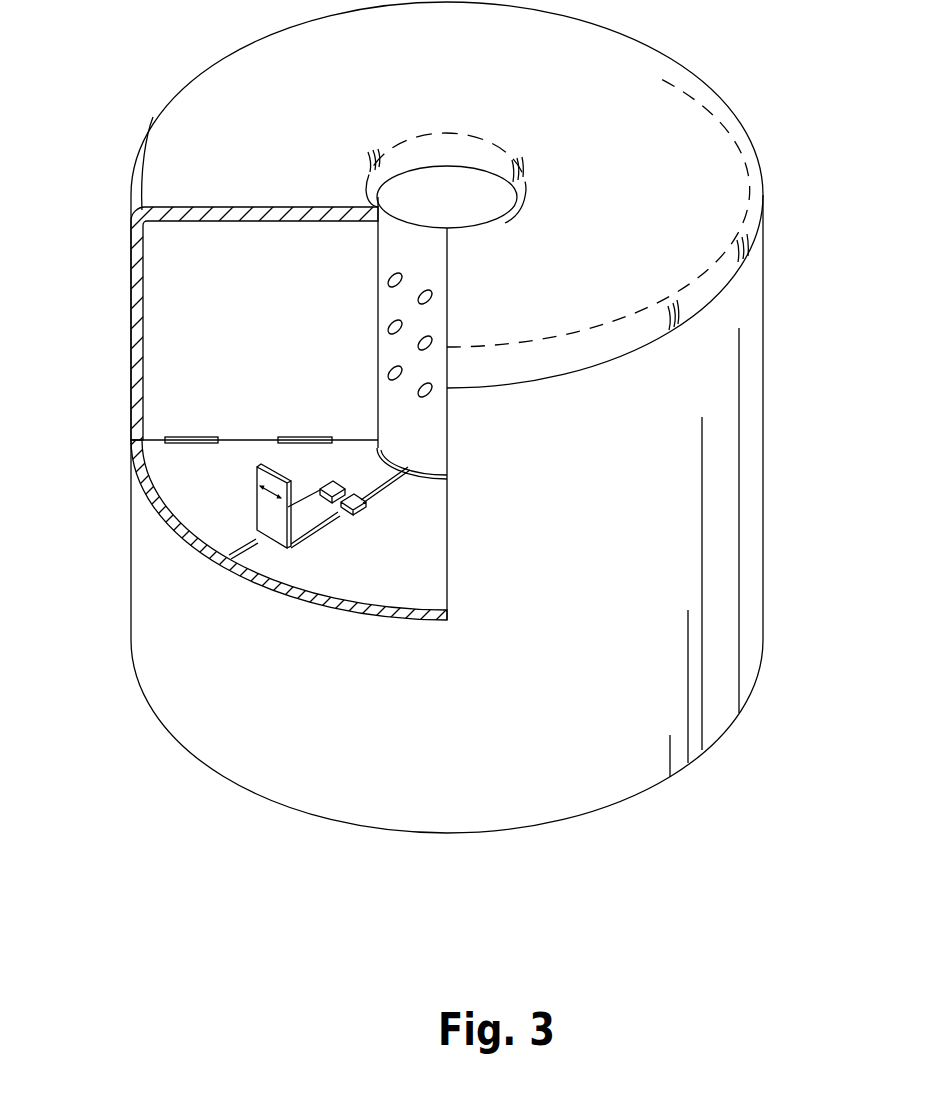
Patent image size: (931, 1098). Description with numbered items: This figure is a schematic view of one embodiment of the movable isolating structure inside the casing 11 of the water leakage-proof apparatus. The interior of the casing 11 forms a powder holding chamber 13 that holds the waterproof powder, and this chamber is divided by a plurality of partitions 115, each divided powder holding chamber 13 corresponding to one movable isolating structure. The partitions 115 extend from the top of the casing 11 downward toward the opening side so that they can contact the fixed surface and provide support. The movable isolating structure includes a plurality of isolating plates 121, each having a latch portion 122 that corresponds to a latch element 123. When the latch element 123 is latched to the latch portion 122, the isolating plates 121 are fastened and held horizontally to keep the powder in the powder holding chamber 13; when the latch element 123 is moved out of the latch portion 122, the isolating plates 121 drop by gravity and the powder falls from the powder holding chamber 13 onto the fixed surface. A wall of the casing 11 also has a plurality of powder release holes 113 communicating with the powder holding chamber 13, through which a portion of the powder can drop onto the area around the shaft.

The casing 11 is at (764, 318).
The powder holding chamber 13 is at (227, 333).
The powder release holes 113 is at (432, 342).
The partitions 115 is at (173, 317).
The isolating plates 121 is at (187, 498).
The latch portion 122 is at (318, 487).
The latch element 123 is at (317, 518).